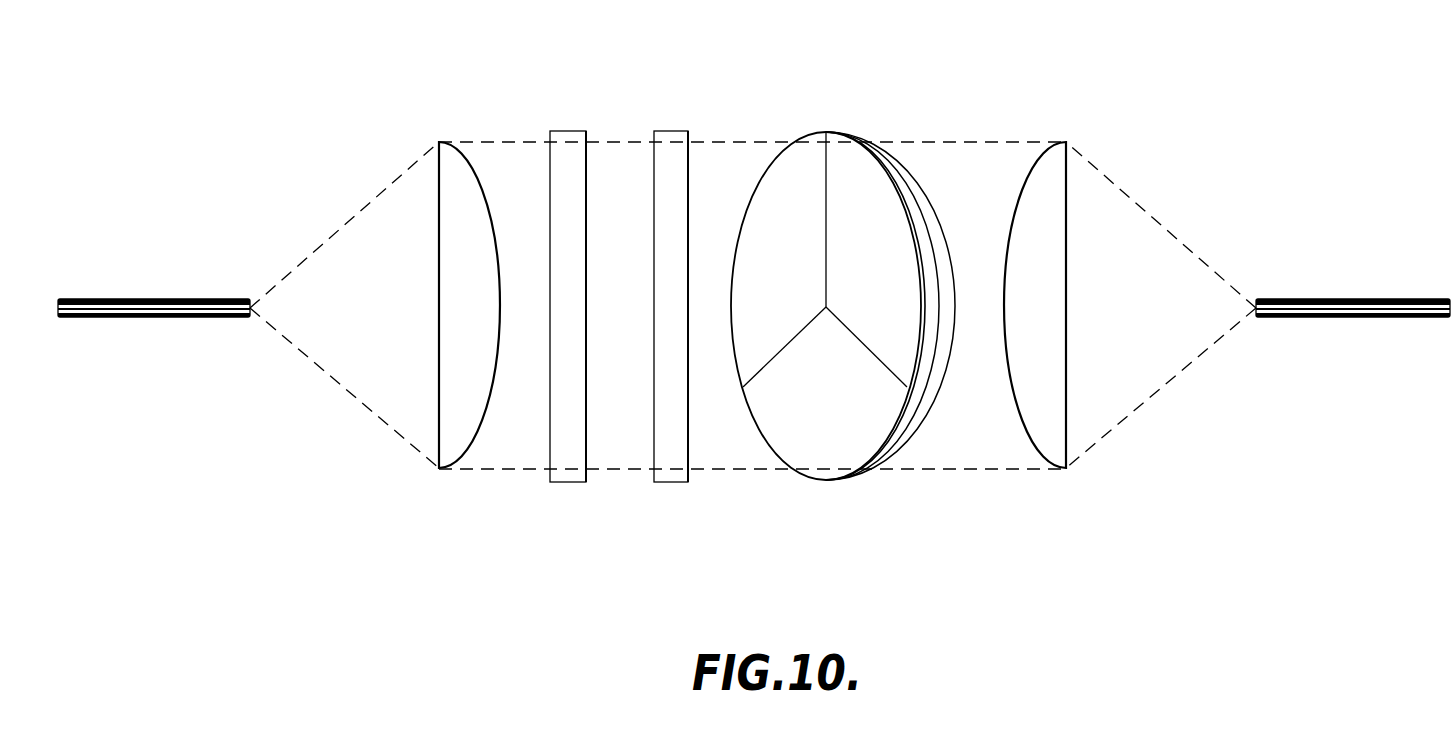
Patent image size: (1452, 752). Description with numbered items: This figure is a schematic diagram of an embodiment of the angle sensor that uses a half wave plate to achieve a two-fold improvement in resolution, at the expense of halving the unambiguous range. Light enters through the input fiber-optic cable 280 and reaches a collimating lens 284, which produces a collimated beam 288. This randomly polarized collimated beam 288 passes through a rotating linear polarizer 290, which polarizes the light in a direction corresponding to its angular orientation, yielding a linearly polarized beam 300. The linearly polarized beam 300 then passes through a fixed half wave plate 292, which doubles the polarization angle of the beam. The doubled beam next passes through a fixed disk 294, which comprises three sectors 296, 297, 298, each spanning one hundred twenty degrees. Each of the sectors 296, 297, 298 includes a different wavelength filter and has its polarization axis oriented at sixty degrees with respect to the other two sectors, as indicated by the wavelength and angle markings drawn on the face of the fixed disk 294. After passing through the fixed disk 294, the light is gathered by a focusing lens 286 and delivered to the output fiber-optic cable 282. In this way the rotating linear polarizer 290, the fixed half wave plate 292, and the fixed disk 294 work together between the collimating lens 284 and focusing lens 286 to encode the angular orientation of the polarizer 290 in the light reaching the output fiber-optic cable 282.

The input fiber-optic cable 280 is at (150, 298).
The output fiber-optic cable 282 is at (1365, 298).
The collimating lens 284 is at (446, 173).
The focusing lens 286 is at (1055, 173).
The collimated beam 288 is at (500, 142).
The rotating linear polarizer 290 is at (562, 483).
The fixed half wave plate 292 is at (667, 483).
The fixed disk 294 is at (843, 329).
The sector 296 is at (867, 171).
The sector 297 is at (788, 167).
The sector 298 is at (862, 435).
The linearly polarized beam 300 is at (613, 142).